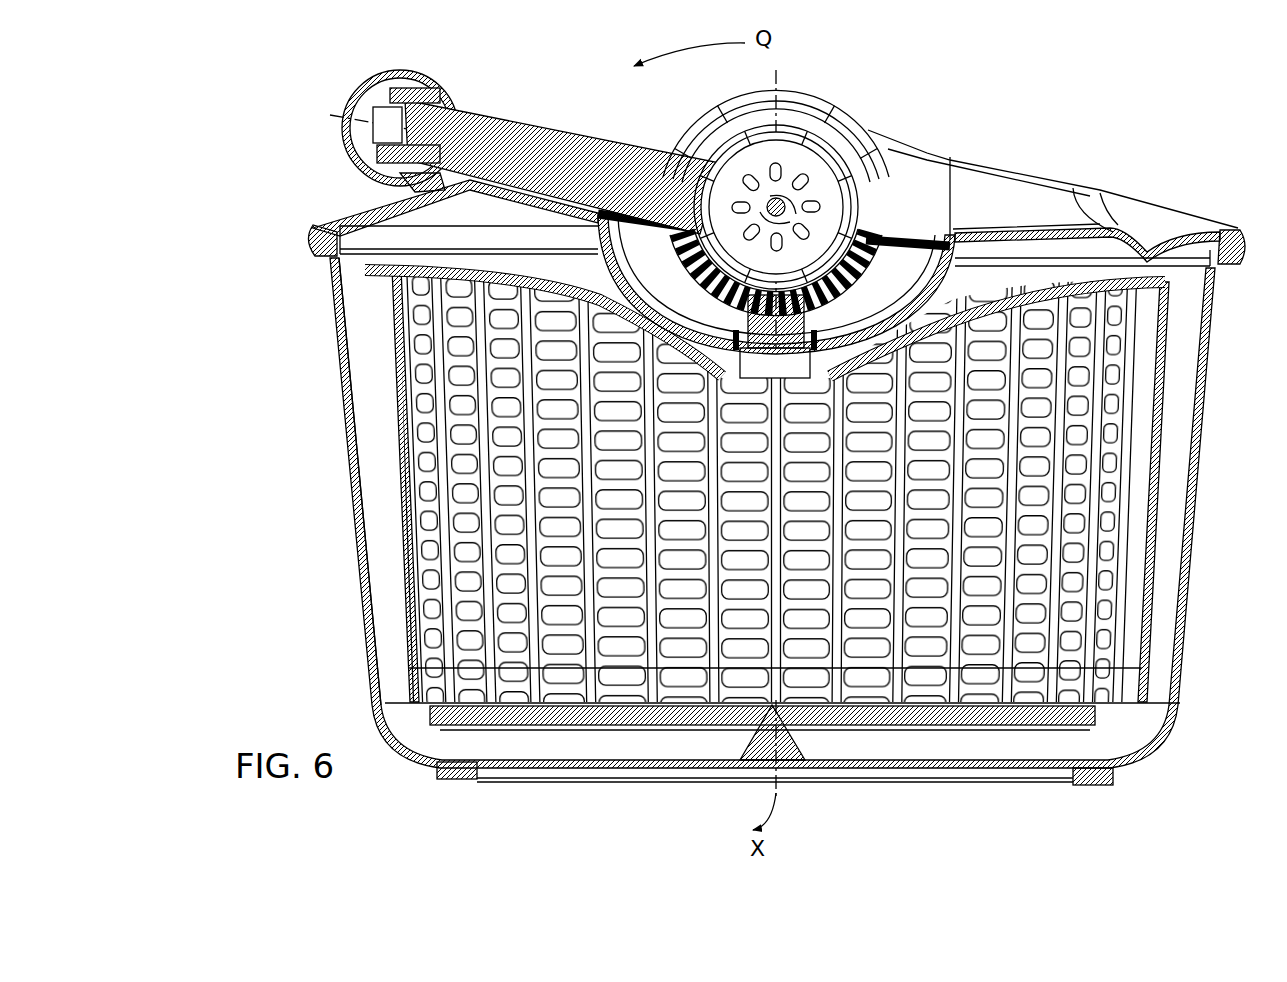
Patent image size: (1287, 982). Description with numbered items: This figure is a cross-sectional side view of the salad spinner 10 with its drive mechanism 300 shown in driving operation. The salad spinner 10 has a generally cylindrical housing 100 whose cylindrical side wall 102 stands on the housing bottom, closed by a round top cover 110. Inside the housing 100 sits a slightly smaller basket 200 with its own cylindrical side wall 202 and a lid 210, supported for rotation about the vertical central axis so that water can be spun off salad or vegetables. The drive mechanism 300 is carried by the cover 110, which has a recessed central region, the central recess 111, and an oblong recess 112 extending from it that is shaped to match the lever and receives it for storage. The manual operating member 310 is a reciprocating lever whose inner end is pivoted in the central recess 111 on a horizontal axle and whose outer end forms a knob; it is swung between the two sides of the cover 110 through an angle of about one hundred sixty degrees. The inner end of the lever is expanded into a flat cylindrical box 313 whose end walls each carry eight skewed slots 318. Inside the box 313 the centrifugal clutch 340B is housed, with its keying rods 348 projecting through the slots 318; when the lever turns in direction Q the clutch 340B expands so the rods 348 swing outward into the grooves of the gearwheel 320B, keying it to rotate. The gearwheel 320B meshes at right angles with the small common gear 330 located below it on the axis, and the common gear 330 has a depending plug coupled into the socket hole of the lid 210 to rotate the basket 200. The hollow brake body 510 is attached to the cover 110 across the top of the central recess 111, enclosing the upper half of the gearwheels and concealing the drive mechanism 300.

The salad spinner 10 is at (232, 103).
The housing 100 is at (338, 398).
The side wall 102 is at (352, 450).
The cover 110 is at (362, 205).
The central recess 111 is at (918, 232).
The oblong recess 112 is at (1137, 232).
The basket 200 is at (383, 518).
The side wall 202 is at (388, 572).
The lid 210 is at (482, 268).
The drive mechanism 300 is at (855, 168).
The manual operating member 310 is at (530, 126).
The flat cylindrical box 313 is at (795, 185).
The slots 318 is at (820, 205).
The gearwheel 320B is at (697, 250).
The common gear 330 is at (822, 318).
The centrifugal clutch 340B is at (793, 148).
The keying rods 348 is at (826, 220).
The brake body 510 is at (698, 116).